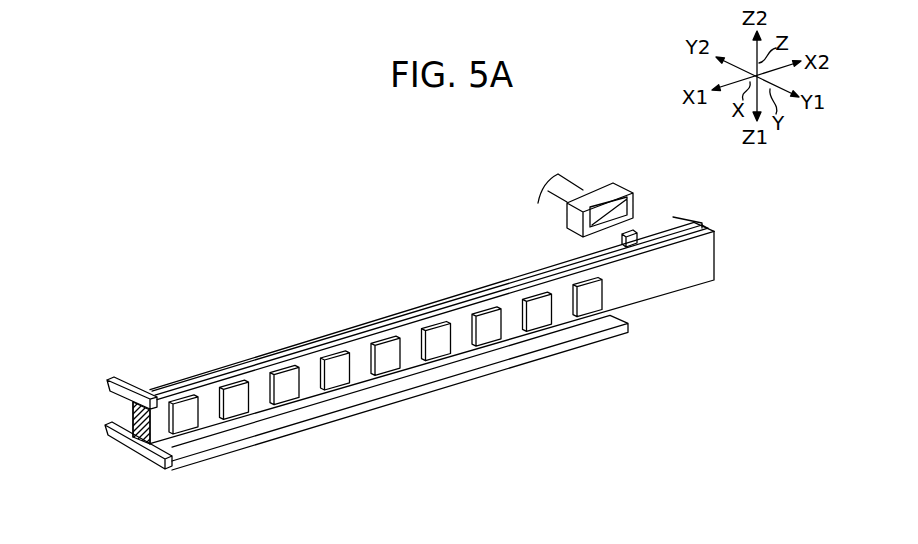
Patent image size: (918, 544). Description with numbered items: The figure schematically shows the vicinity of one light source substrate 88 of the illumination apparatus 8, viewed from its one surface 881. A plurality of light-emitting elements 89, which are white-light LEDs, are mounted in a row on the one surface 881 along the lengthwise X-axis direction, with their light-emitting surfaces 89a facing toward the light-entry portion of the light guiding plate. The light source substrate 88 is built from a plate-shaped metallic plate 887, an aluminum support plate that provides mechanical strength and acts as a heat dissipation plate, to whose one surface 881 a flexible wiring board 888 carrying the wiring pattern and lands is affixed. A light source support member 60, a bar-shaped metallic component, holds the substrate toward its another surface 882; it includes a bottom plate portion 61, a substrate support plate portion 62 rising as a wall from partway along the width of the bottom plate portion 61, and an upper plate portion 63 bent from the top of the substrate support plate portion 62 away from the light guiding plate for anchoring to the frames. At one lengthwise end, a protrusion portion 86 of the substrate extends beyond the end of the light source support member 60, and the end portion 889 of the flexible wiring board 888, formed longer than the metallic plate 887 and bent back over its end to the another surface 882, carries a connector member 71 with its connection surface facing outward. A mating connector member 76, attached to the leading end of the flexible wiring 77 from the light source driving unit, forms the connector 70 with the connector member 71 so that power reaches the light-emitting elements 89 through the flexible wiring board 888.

The illumination apparatus 8 is at (516, 117).
The light source support member 60 is at (98, 380).
The bottom plate portion 61 is at (107, 433).
The substrate support plate portion 62 is at (120, 413).
The upper plate portion 63 is at (113, 377).
The connector 70 is at (487, 207).
The connector member 71 is at (590, 250).
The connector member 76 is at (567, 209).
The flexible wiring 77 is at (572, 192).
The protrusion portion 86 is at (700, 222).
The light source substrate 88 is at (325, 270).
The one surface 881 is at (360, 347).
The another surface 882 is at (117, 433).
The metallic plate 887 is at (277, 347).
The flexible wiring board 888 is at (323, 342).
The end portion 889 is at (666, 236).
The light-emitting element 89 is at (233, 397).
The light-emitting surface 89a is at (240, 407).